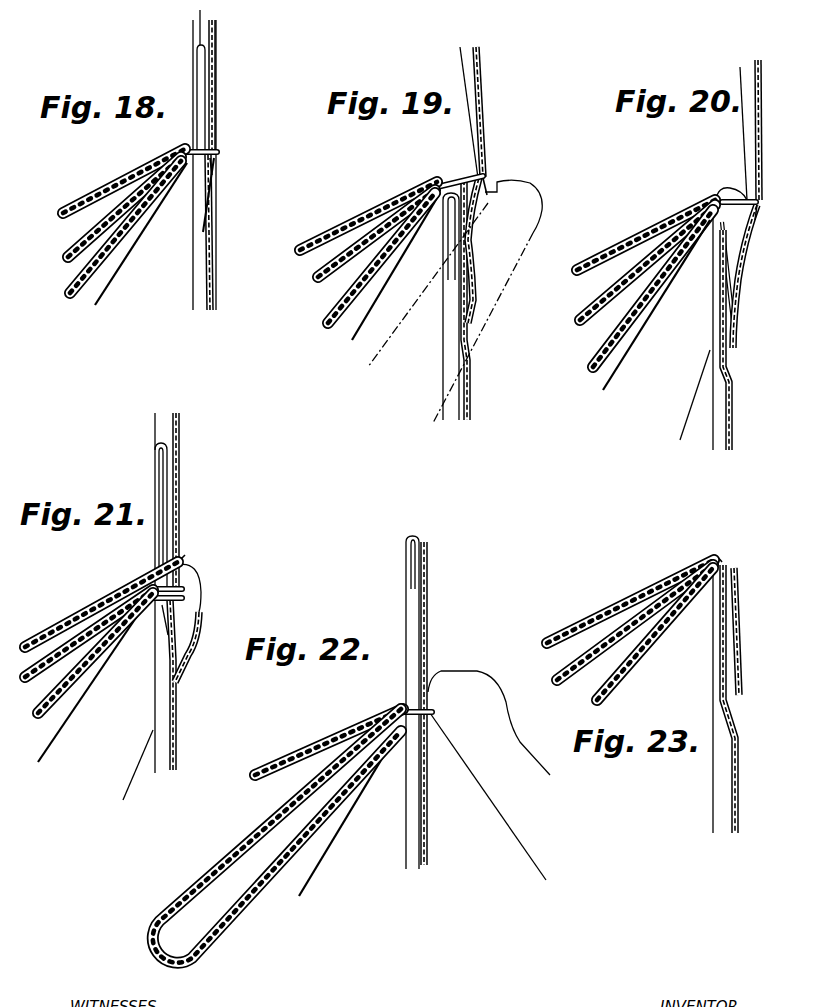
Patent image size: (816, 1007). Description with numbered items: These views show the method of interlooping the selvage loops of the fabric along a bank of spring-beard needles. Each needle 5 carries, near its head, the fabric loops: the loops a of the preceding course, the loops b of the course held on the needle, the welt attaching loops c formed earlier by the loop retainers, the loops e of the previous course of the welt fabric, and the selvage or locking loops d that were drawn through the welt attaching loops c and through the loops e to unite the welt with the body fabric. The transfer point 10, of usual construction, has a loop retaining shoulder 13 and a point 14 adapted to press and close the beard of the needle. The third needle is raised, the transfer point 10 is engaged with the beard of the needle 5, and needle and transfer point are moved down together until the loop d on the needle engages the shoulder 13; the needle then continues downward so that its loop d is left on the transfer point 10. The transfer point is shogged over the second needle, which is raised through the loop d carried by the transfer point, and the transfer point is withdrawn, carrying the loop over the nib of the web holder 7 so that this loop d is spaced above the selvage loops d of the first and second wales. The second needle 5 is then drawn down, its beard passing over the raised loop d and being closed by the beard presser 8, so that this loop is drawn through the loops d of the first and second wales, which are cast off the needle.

In FIG. 18, the needle 5 is at (205, 263).
In FIG. 19, the needle 5 is at (458, 397).
In FIG. 20, the needle 5 is at (725, 375).
In FIG. 21, the needle 5 is at (167, 728).
In FIG. 22, the needle 5 is at (426, 791).
In FIG. 23, the needle 5 is at (732, 812).
In FIG. 19, the web holder 7 is at (493, 297).
In FIG. 21, the web holder 7 is at (195, 615).
In FIG. 22, the beard presser 8 is at (461, 653).
In FIG. 18, the transfer point 10 is at (215, 72).
In FIG. 19, the transfer point 10 is at (480, 80).
In FIG. 20, the transfer point 10 is at (762, 98).
In FIG. 21, the transfer point 10 is at (182, 452).
In FIG. 18, the loop retaining shoulder 13 is at (215, 163).
In FIG. 19, the loop retaining shoulder 13 is at (483, 177).
In FIG. 20, the loop retaining shoulder 13 is at (757, 205).
In FIG. 21, the loop retaining shoulder 13 is at (180, 563).
In FIG. 18, the point 14 is at (210, 187).
In FIG. 19, the point 14 is at (475, 220).
In FIG. 20, the point 14 is at (747, 240).
In FIG. 18, the loops a is at (160, 147).
In FIG. 19, the loops a is at (415, 172).
In FIG. 20, the loops a is at (646, 235).
In FIG. 21, the loops a is at (123, 582).
In FIG. 22, the loops a is at (372, 711).
In FIG. 23, the loops a is at (630, 601).
In FIG. 18, the loops b is at (127, 168).
In FIG. 19, the loops b is at (380, 197).
In FIG. 20, the loops b is at (656, 305).
In FIG. 21, the loops b is at (107, 600).
In FIG. 22, the loops b is at (339, 738).
In FIG. 18, the welt attaching loops c is at (177, 147).
In FIG. 19, the welt attaching loops c is at (436, 173).
In FIG. 20, the welt attaching loops c is at (647, 262).
In FIG. 21, the welt attaching loops c is at (137, 582).
In FIG. 22, the welt attaching loops c is at (383, 710).
In FIG. 23, the welt attaching loops c is at (635, 622).
In FIG. 18, the loops d is at (217, 152).
In FIG. 19, the loops d is at (481, 173).
In FIG. 20, the loops d is at (755, 200).
In FIG. 21, the loops d is at (178, 560).
In FIG. 22, the loops d is at (426, 684).
In FIG. 23, the loops d is at (711, 558).
In FIG. 18, the loops e is at (187, 147).
In FIG. 19, the loops e is at (447, 173).
In FIG. 20, the loops e is at (653, 288).
In FIG. 21, the loops e is at (95, 653).
In FIG. 23, the loops e is at (655, 634).